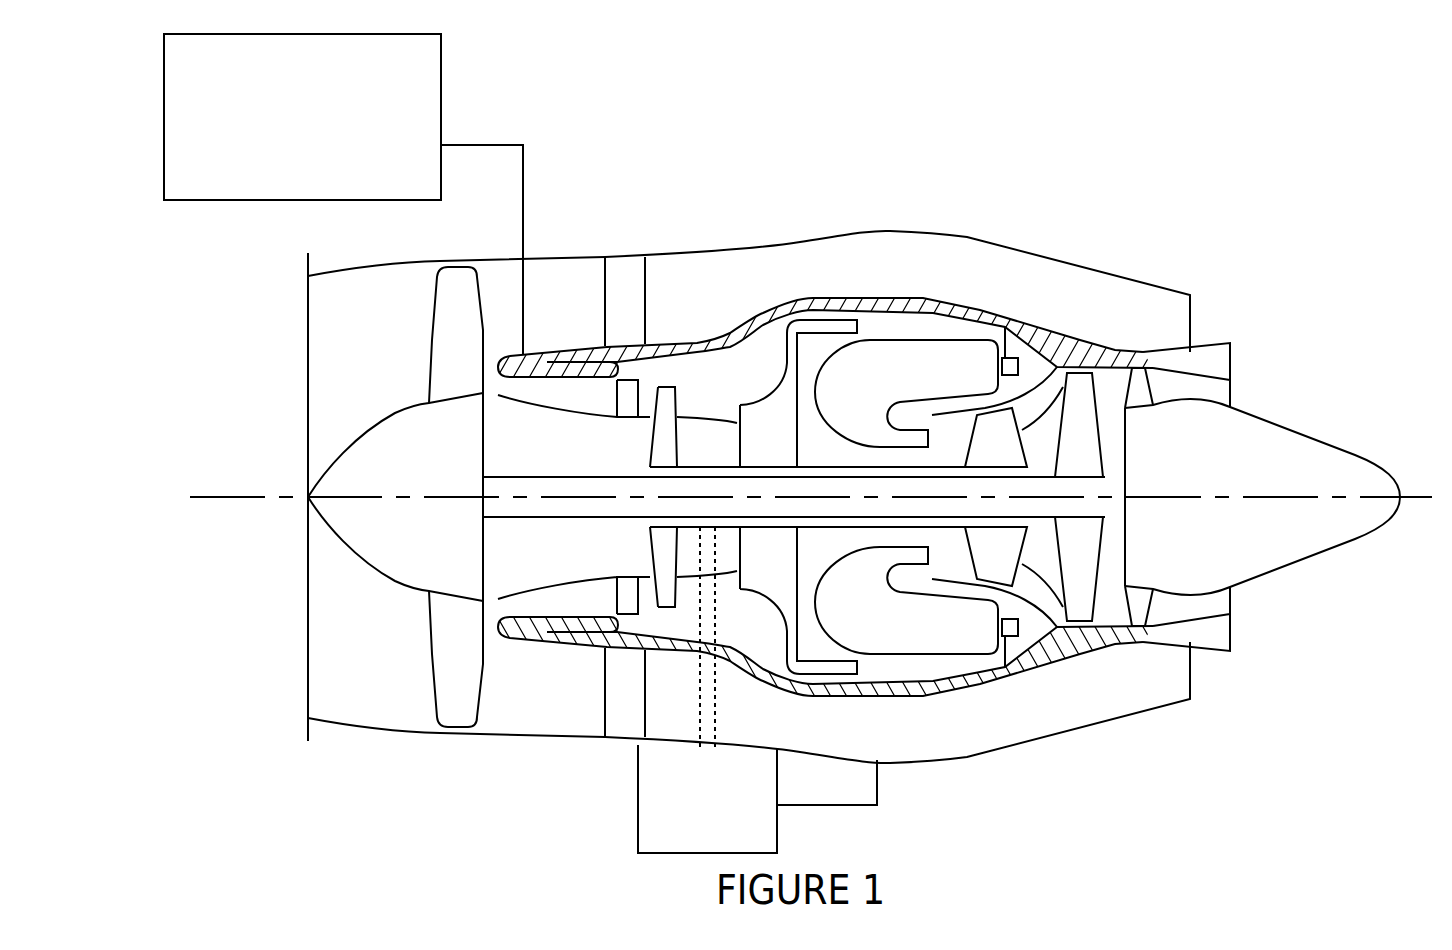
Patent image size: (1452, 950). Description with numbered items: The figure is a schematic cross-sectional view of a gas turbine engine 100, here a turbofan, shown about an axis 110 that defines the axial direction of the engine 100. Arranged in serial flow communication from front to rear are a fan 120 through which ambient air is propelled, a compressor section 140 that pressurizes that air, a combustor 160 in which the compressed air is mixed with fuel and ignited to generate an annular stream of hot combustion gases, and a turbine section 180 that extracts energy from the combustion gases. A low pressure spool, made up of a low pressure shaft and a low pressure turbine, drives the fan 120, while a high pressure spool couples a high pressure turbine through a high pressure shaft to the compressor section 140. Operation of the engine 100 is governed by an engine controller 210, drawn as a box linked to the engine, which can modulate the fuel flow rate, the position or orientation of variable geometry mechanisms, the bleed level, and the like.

The gas turbine engine 100 is at (1058, 188).
The axis 110 is at (223, 495).
The fan 120 is at (452, 645).
The compressor section 140 is at (700, 395).
The combustor 160 is at (910, 358).
The turbine section 180 is at (1038, 562).
The engine controller 210 is at (330, 152).